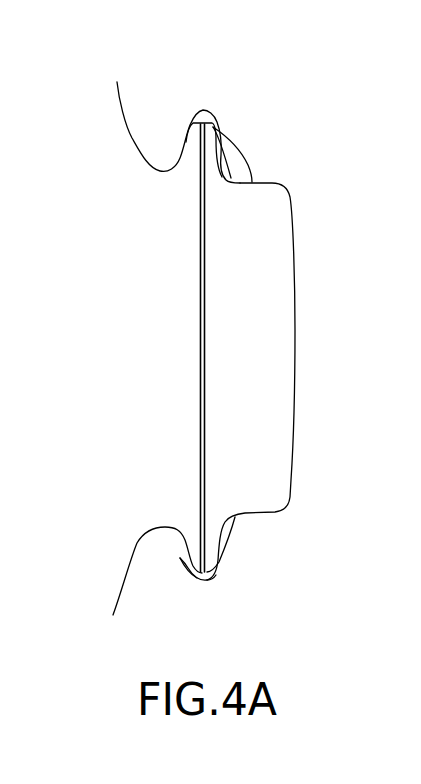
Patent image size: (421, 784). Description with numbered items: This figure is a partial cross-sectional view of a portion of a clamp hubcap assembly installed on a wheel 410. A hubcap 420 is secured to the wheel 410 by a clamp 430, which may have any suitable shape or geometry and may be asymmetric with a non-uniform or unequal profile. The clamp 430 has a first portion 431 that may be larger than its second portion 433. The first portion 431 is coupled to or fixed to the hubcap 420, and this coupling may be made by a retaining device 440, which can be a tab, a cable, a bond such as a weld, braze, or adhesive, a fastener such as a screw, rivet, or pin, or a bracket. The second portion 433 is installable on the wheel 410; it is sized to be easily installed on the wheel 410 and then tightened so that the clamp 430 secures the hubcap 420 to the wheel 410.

The wheel 410 is at (117, 100).
The hubcap 420 is at (296, 362).
The clamp 430 is at (184, 125).
The first portion 431 is at (215, 578).
The second portion 433 is at (182, 578).
The retaining device 440 is at (249, 167).